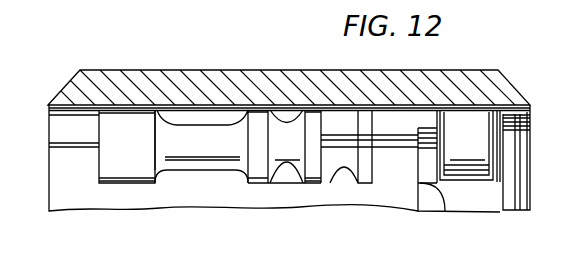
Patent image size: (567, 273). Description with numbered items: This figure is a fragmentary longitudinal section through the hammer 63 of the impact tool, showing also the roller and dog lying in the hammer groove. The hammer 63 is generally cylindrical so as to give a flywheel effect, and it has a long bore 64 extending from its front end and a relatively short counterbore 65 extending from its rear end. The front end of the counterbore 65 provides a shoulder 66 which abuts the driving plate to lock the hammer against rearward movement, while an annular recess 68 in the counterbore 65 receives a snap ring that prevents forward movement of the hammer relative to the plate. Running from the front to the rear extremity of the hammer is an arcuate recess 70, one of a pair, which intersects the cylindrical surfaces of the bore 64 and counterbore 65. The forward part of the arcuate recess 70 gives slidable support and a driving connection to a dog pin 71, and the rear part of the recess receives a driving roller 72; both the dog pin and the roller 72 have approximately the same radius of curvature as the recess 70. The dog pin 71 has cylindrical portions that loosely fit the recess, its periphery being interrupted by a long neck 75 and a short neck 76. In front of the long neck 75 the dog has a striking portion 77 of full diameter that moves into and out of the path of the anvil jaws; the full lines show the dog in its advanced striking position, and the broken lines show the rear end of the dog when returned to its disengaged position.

The hammer 63 is at (483, 82).
The bore 64 is at (90, 194).
The counterbore 65 is at (431, 206).
The shoulder 66 is at (445, 213).
The annular recess 68 is at (530, 108).
The arcuate recess 70 is at (390, 120).
The dog pin 71 is at (195, 108).
The driving roller 72 is at (452, 110).
The long neck 75 is at (203, 154).
The short neck 76 is at (290, 160).
The striking portion 77 is at (112, 118).